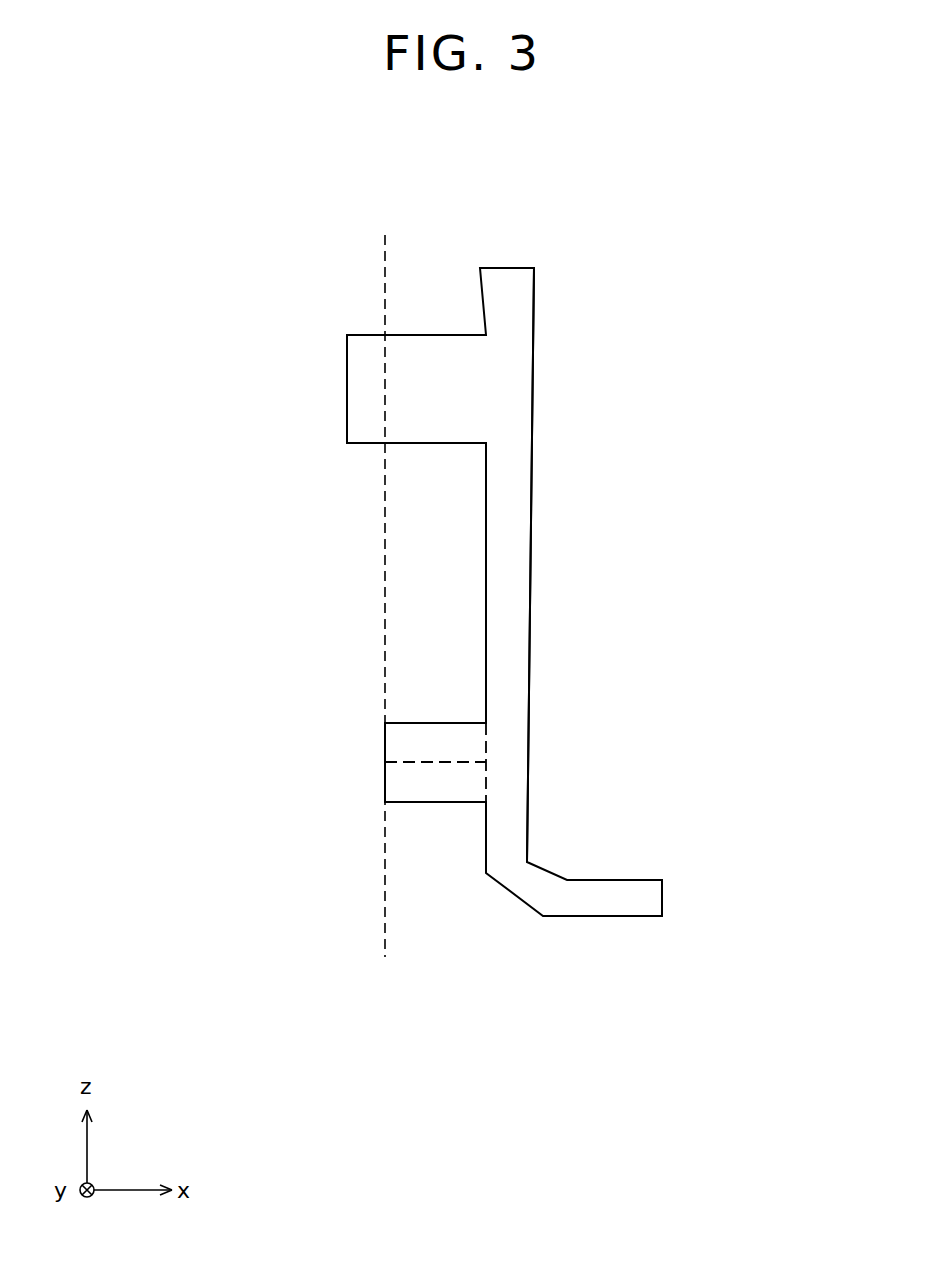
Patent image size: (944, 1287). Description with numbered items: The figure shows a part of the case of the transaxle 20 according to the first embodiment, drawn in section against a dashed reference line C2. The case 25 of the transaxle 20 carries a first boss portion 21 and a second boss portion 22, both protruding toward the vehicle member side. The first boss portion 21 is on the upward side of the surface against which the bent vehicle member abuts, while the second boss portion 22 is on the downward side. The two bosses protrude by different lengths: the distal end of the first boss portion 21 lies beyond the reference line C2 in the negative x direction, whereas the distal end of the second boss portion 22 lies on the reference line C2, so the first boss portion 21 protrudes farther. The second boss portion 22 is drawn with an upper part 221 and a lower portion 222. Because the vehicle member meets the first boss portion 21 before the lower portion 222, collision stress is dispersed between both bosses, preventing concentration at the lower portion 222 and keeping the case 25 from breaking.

The transaxle 20 is at (557, 244).
The first boss portion 21 is at (365, 393).
The second boss portion 22 is at (388, 761).
The upper surface of protrusion 221 is at (442, 740).
The lower portion 222 is at (460, 780).
The case 25 is at (510, 492).
The reference line C2 is at (383, 267).